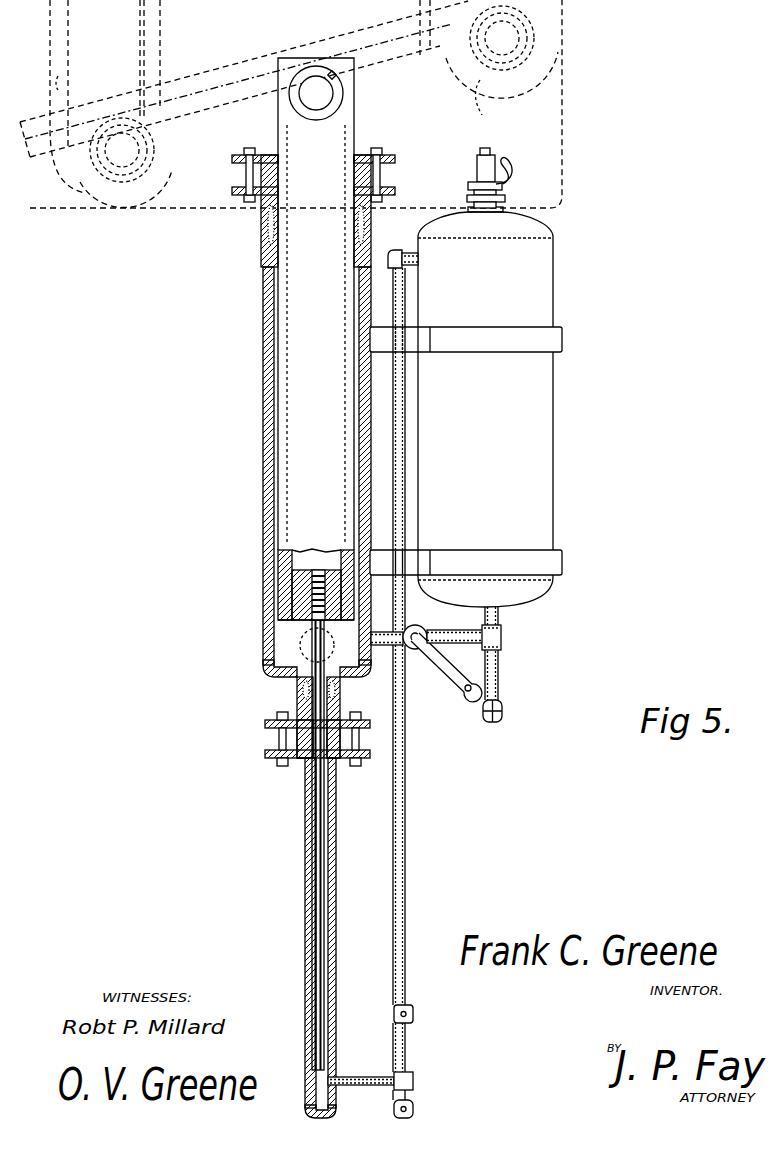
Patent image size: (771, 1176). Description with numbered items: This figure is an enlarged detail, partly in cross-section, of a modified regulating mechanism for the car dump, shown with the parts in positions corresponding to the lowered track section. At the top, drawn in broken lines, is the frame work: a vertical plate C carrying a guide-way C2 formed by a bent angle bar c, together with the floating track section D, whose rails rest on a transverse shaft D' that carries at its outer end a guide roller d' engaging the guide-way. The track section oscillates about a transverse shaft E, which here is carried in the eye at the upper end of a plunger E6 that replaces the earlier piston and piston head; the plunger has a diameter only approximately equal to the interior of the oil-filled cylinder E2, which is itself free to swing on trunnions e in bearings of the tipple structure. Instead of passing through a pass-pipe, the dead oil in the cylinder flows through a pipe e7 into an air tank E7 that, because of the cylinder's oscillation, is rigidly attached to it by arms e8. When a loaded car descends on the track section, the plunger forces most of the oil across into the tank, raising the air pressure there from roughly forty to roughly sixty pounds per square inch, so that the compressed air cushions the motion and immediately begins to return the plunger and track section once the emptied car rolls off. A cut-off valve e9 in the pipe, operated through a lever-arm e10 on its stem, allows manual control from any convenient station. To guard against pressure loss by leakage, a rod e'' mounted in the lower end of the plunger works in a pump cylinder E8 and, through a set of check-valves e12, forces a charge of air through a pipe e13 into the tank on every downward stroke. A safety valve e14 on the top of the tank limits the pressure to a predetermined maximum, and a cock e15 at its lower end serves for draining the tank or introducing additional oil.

The plate C is at (560, 137).
The guide-way C2 is at (304, 104).
The angle bar c is at (58, 82).
The track section D is at (244, 79).
The shaft D' is at (383, 124).
The guide roller d' is at (334, 110).
The shaft E is at (322, 95).
The cylinder E2 is at (262, 392).
The plunger E6 is at (316, 339).
The air tank E7 is at (485, 407).
The pump cylinder E8 is at (305, 888).
The trunnion e is at (263, 662).
The rod e'' is at (266, 820).
The pipe e7 is at (452, 645).
The arm e8 is at (466, 451).
The cut-off valve e9 is at (433, 613).
The lever-arm e10 is at (445, 677).
The check-valve e12 is at (413, 1013).
The pipe e13 is at (407, 895).
The safety valve e14 is at (477, 160).
The cock e15 is at (502, 710).